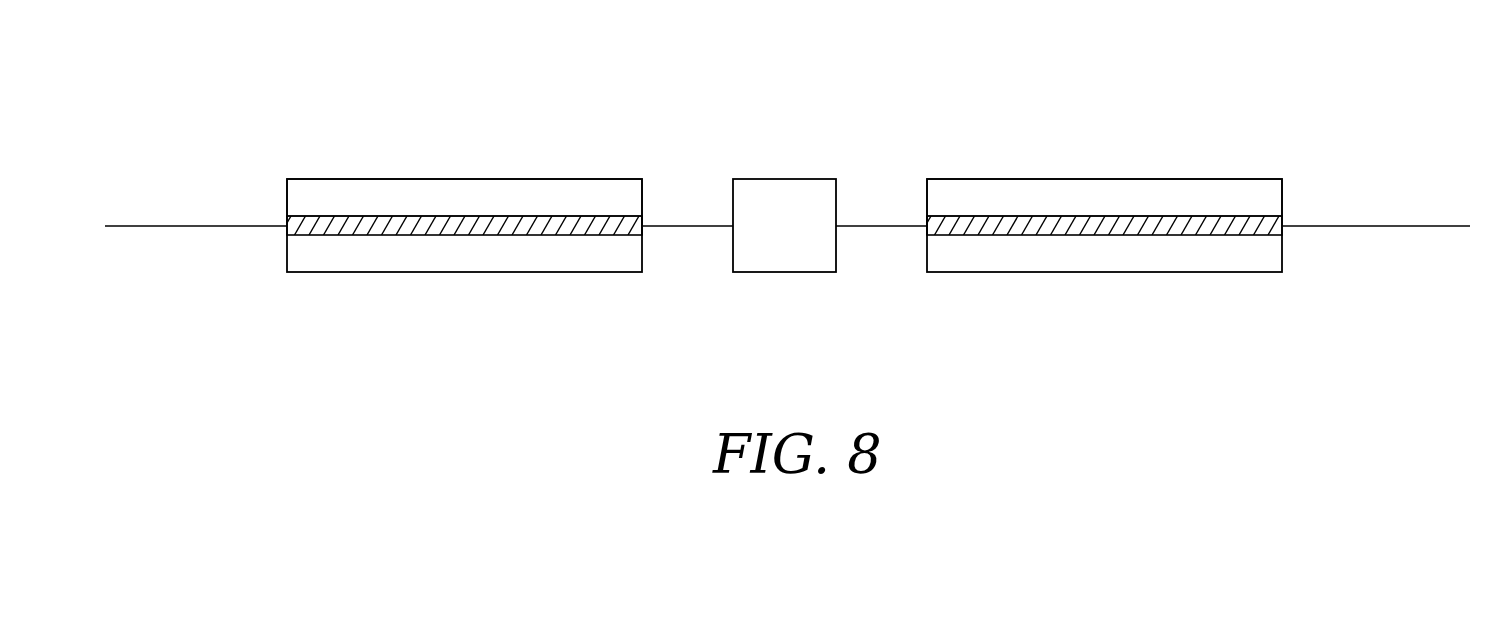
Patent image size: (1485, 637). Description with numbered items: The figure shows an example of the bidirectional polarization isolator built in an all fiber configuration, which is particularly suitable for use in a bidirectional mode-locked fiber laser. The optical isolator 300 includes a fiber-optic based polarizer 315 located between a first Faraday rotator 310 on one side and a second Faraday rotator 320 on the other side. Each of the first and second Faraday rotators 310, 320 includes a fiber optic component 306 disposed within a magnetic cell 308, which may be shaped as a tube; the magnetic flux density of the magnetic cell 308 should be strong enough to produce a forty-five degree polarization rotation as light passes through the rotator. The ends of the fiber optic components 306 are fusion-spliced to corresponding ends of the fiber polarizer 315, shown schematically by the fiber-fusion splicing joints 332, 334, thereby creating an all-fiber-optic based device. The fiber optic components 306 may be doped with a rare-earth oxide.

The optical isolator 300 is at (336, 108).
The fiber optic component 306 is at (322, 221).
The magnetic cell 308 is at (294, 187).
The first Faraday rotator 310 is at (465, 178).
The fiber-optic based polarizer 315 is at (785, 178).
The second Faraday rotator 320 is at (1105, 178).
The fiber-fusion splicing joint 332 is at (643, 230).
The fiber-fusion splicing joint 334 is at (926, 232).